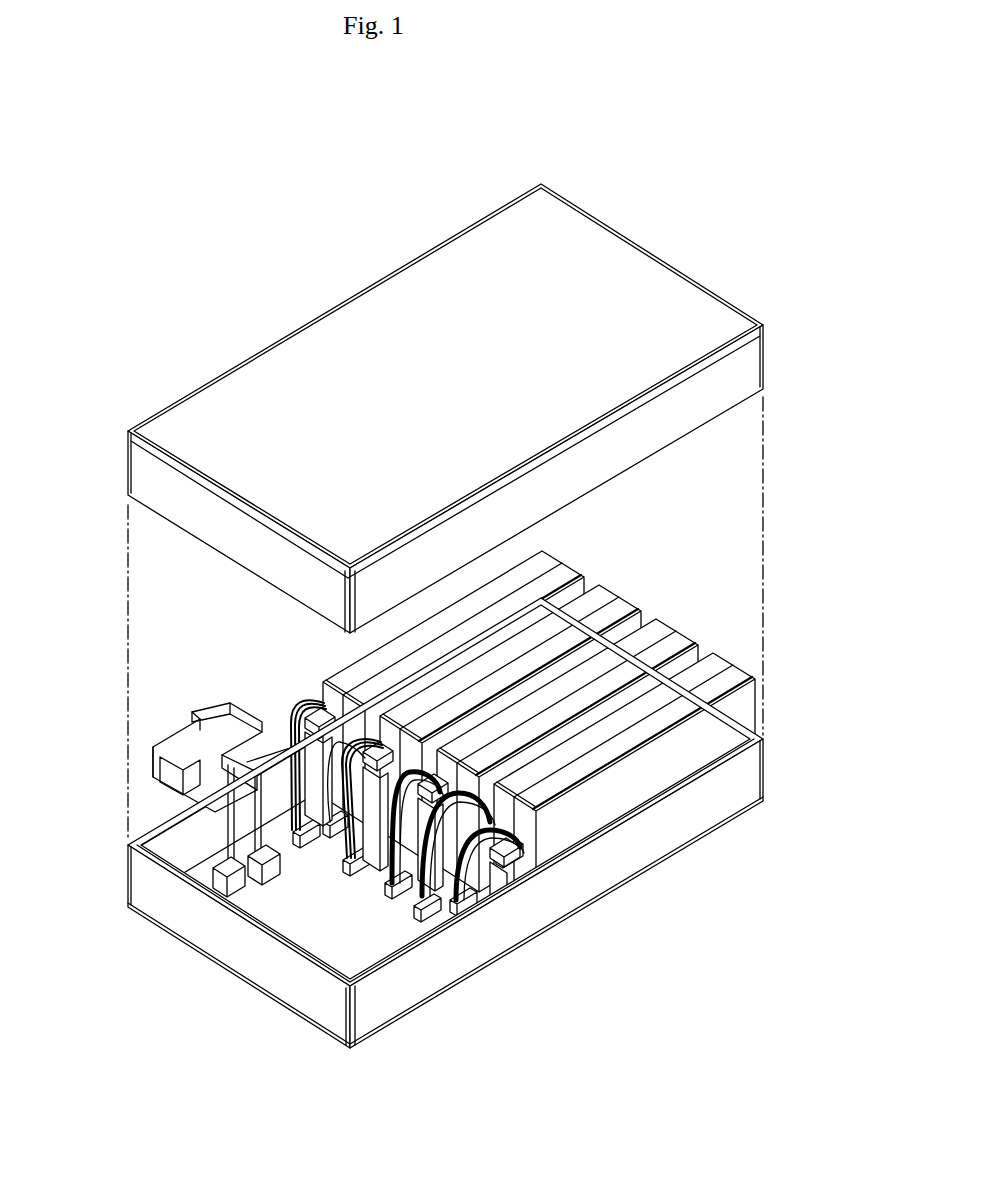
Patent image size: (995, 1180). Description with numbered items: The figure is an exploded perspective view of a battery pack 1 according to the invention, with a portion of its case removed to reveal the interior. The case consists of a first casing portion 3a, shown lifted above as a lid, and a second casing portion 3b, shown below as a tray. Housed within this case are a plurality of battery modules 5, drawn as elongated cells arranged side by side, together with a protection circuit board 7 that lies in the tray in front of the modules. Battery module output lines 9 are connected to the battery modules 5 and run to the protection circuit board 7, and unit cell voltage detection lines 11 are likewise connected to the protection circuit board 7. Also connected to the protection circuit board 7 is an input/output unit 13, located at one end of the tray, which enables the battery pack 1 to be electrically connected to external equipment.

The battery pack 1 is at (158, 122).
The first casing portion 3a is at (337, 377).
The second casing portion 3b is at (600, 868).
The battery module 5 is at (565, 583).
The protection circuit board 7 is at (358, 948).
The battery module output line 9 is at (375, 872).
The unit cell voltage detection line 11 is at (372, 887).
The input/output unit 13 is at (172, 745).